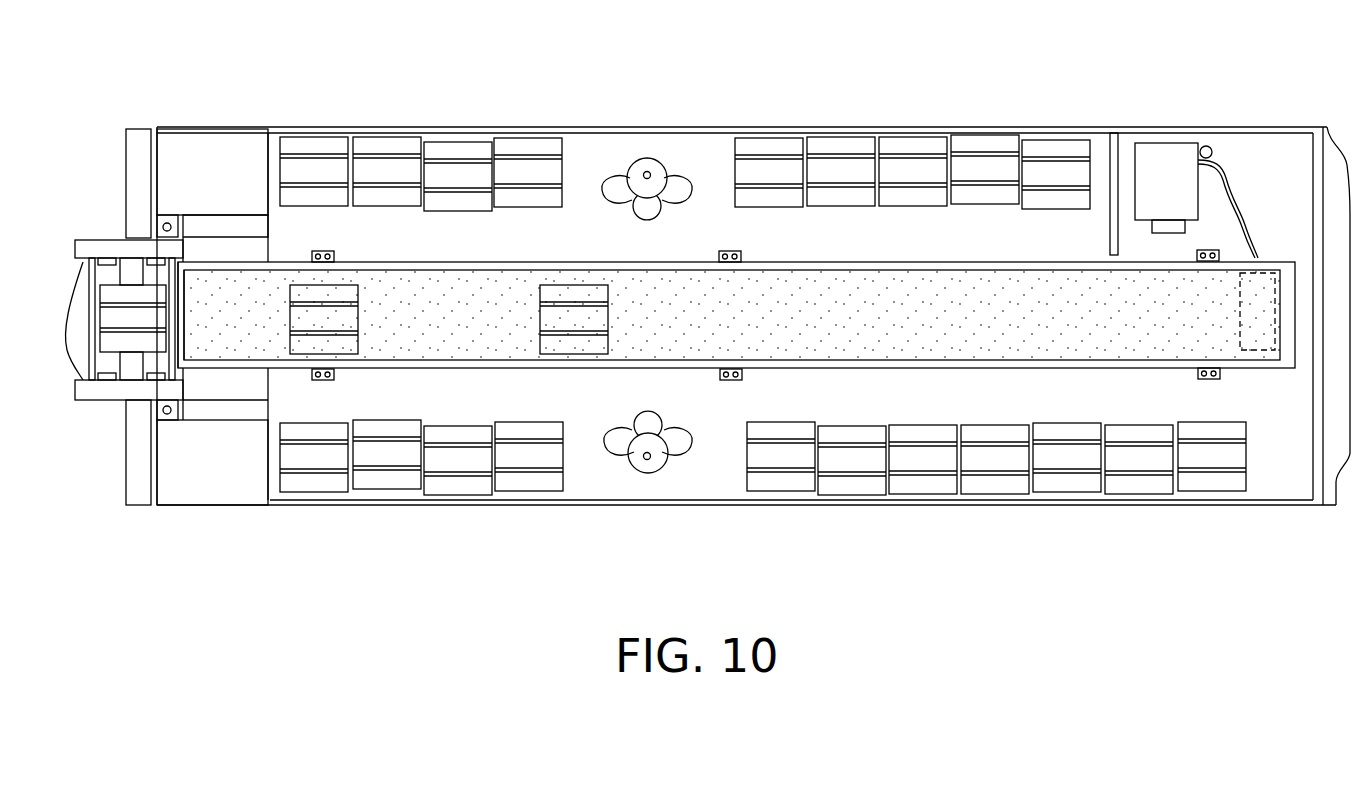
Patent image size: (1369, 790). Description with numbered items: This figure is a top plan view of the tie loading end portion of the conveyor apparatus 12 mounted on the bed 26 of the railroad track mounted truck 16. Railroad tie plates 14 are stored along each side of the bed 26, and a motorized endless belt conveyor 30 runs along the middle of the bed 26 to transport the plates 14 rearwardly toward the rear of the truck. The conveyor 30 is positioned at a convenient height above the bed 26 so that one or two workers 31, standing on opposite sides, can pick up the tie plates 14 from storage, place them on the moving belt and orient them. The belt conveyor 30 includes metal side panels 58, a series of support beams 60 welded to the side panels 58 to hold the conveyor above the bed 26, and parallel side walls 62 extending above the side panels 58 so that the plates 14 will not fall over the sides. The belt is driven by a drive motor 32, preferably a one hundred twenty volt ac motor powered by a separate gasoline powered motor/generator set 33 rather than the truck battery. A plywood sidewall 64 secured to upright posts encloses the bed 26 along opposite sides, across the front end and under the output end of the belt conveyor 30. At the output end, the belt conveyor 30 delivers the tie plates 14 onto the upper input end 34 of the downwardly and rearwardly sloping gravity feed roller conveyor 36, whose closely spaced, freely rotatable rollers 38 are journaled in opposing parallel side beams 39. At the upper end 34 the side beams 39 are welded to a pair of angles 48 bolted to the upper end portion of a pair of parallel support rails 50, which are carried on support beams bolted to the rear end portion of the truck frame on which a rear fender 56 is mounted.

The conveyor apparatus 12 is at (233, 402).
The railroad tie plates 14 is at (532, 135).
The railroad track mounted truck 16 is at (780, 127).
The bed 26 is at (942, 256).
The belt conveyor 30 is at (800, 250).
The workers 31 is at (628, 160).
The drive motor 32 is at (1240, 298).
The gasoline powered motor/generator set 33 is at (1152, 143).
The upper input end 34 is at (200, 368).
The gravity feed roller conveyor 36 is at (92, 238).
The rollers 38 is at (116, 262).
The side beams 39 is at (100, 400).
The angles 48 is at (190, 243).
The support rails 50 is at (240, 238).
The rear fender 56 is at (135, 157).
The side panels 58 is at (660, 370).
The support beams 60 is at (722, 257).
The side walls 62 is at (425, 262).
The plywood sidewall 64 is at (275, 248).